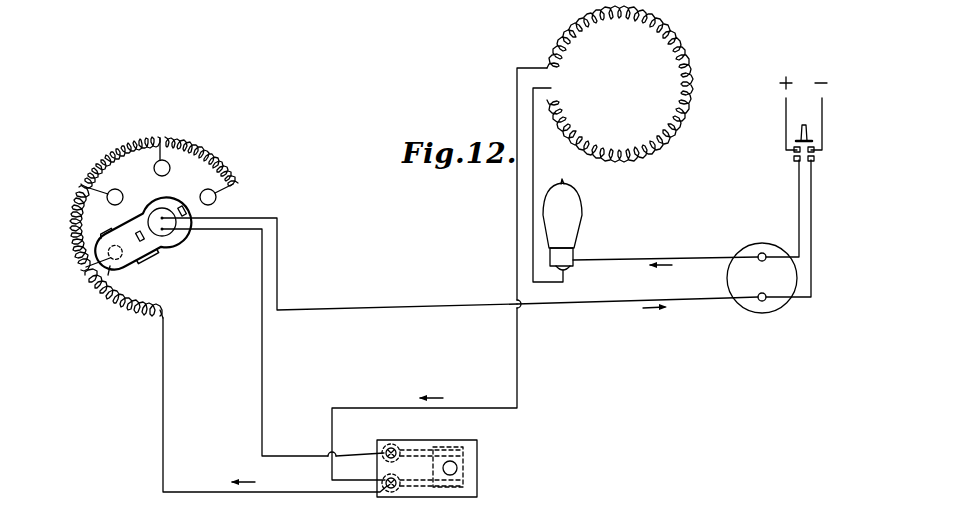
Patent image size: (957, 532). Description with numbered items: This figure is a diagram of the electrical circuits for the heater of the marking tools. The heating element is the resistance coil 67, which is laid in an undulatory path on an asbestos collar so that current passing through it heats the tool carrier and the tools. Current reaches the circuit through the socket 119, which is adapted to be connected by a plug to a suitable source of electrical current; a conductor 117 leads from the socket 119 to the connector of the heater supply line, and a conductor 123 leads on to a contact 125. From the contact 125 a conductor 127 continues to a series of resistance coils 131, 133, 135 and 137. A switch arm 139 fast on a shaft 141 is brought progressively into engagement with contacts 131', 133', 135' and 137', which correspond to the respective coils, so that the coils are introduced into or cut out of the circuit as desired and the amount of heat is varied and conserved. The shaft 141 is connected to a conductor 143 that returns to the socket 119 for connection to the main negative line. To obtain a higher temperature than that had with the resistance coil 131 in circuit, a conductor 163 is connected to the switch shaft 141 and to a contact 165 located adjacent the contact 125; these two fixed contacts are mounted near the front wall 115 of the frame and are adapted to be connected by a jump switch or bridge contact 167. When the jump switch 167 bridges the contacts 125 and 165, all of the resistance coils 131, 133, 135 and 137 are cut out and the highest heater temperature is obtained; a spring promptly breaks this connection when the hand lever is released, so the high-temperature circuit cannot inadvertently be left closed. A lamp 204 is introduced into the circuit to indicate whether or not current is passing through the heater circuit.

The resistance coil 67 is at (667, 32).
The wall 115 is at (457, 440).
The conductor 117 is at (617, 258).
The socket 119 is at (750, 247).
The conductor 123 is at (517, 207).
The contact 125 is at (392, 492).
The conductor 127 is at (247, 493).
The resistance coil 131 is at (124, 301).
The contact 131' is at (80, 286).
The resistance coil 133 is at (76, 228).
The contact 133' is at (78, 193).
The resistance coil 135 is at (120, 158).
The contact 135' is at (177, 138).
The resistance coil 137 is at (207, 155).
The contact 137' is at (247, 191).
The switch arm 139 is at (152, 245).
The shaft 141 is at (158, 212).
The conductor 143 is at (277, 255).
The conductor 163 is at (262, 350).
The contact 165 is at (388, 447).
The jump switch 167 is at (467, 463).
The lamp 204 is at (573, 211).